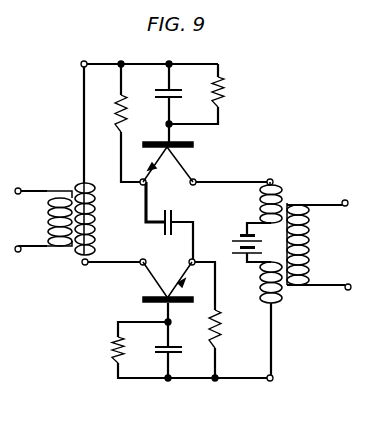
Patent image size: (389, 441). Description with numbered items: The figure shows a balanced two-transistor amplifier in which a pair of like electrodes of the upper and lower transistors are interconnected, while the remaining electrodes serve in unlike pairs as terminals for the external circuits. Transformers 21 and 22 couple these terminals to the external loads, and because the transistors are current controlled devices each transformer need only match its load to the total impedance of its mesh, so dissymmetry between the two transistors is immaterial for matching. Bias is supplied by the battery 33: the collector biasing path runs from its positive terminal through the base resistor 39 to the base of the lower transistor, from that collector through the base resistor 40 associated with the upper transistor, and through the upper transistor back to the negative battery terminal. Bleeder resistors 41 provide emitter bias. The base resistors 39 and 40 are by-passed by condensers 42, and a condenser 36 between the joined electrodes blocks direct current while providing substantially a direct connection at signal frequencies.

The transformer 21 is at (72, 185).
The transformer 22 is at (288, 198).
The battery 33 is at (237, 237).
The condenser 36 is at (170, 208).
The base resistor 39 is at (113, 345).
The base resistor 40 is at (230, 89).
The bleeder resistor 41 is at (113, 112).
The condenser 42 is at (157, 90).